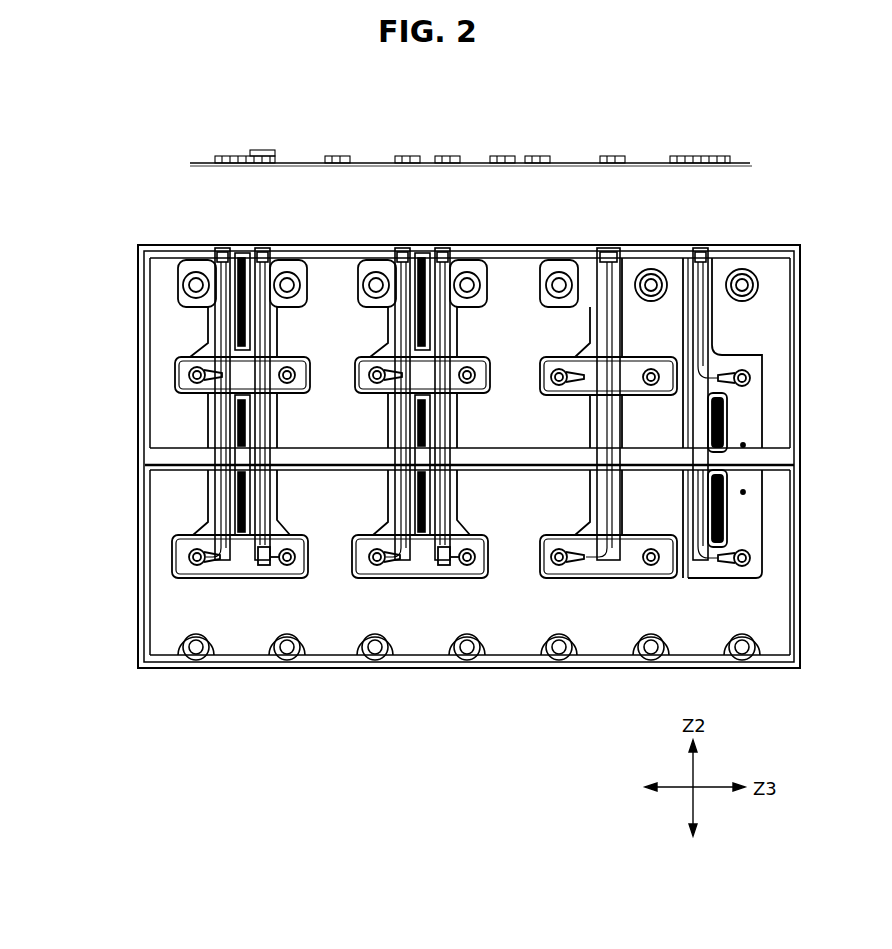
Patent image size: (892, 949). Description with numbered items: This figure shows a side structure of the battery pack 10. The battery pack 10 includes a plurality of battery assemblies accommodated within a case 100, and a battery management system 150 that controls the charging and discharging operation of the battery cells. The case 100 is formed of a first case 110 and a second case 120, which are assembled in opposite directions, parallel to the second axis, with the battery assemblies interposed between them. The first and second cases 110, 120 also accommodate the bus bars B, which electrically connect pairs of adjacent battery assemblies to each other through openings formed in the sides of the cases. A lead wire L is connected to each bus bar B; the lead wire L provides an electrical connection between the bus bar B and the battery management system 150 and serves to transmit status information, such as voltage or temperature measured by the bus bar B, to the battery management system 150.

The battery pack 10 is at (125, 683).
The case 100 is at (72, 378).
The first case 110 is at (162, 380).
The second case 120 is at (162, 540).
The battery management system 150 is at (190, 163).
The bus bar B is at (240, 562).
The lead wire L is at (258, 343).